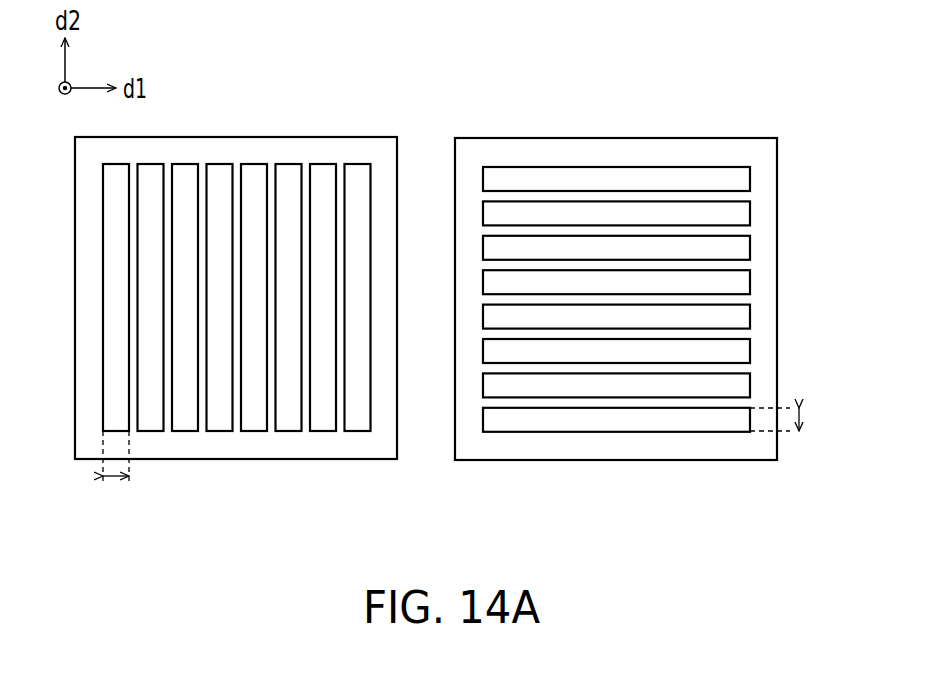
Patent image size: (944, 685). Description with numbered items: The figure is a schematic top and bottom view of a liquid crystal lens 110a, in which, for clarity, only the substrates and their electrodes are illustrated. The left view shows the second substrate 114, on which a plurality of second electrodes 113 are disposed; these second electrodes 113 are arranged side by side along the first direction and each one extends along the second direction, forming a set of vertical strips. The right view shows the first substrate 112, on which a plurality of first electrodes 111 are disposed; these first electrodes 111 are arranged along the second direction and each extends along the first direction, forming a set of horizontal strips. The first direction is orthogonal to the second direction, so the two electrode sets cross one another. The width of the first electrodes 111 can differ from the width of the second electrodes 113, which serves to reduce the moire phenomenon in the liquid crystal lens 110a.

The second substrate 114 is at (256, 302).
The second electrodes 113 is at (355, 418).
The first substrate 112 is at (634, 306).
The first electrodes 111 is at (733, 420).
The liquid crystal lens 110a is at (454, 328).